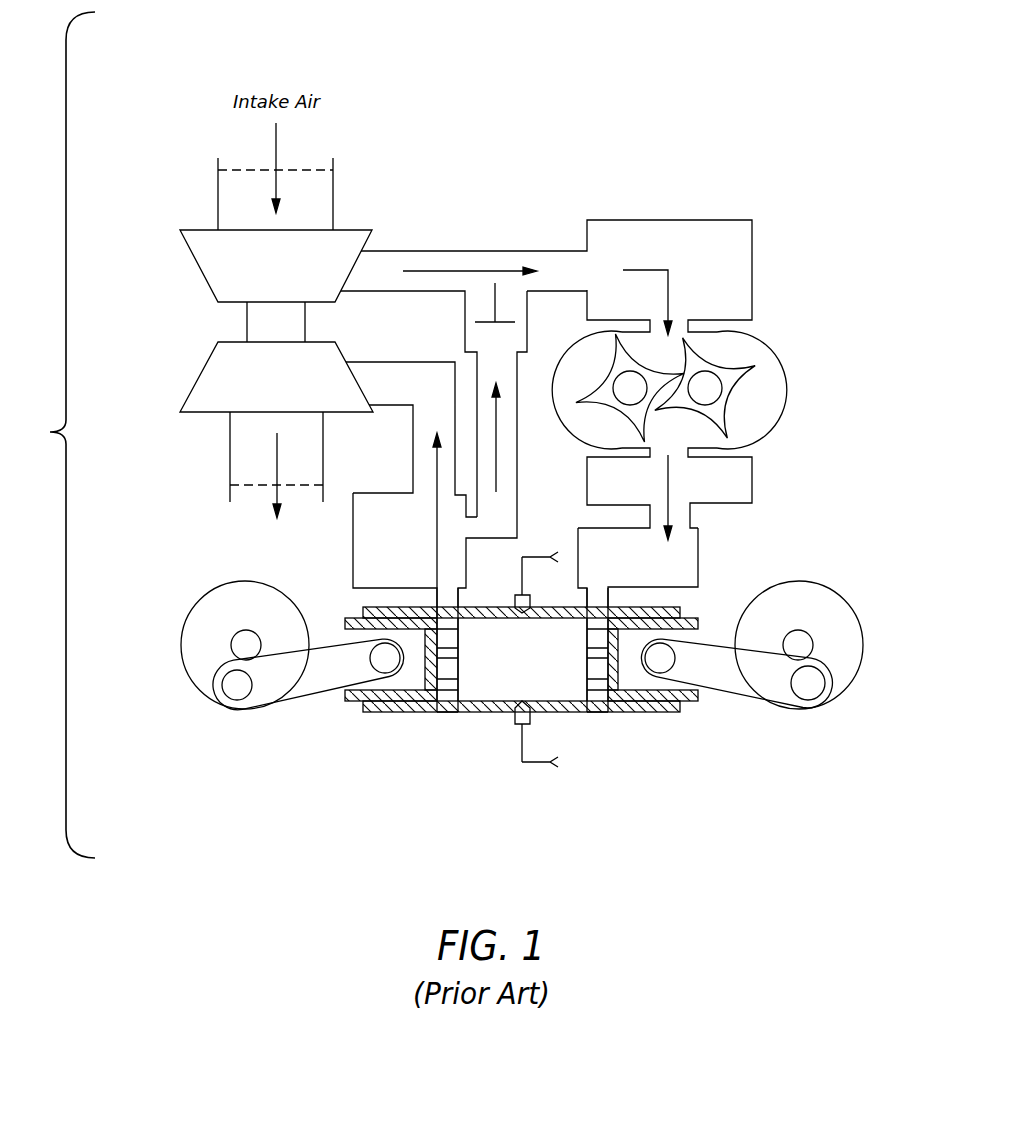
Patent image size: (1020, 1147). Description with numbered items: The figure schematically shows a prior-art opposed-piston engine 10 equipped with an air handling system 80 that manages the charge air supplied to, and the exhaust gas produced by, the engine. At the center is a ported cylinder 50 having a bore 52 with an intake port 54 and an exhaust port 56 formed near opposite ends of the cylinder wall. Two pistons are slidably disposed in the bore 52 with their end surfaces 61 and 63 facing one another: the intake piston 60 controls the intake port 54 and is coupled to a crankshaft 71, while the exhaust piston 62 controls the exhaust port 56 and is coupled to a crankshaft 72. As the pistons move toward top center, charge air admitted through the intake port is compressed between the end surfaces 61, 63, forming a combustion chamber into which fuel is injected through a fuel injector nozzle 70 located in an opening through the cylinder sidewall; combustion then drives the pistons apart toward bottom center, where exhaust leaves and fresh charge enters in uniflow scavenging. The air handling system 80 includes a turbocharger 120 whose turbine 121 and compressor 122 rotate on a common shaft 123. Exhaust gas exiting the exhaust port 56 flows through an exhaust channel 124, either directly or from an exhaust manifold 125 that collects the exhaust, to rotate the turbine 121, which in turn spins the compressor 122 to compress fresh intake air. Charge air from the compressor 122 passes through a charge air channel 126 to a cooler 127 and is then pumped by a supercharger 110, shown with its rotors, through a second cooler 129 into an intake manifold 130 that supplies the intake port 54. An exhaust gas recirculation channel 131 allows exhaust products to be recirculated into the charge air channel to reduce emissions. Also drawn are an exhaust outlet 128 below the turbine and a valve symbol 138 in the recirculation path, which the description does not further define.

The opposed-piston engine 10 is at (48, 432).
The air handling system 80 is at (548, 85).
The turbocharger 120 is at (245, 321).
The compressor 122 is at (196, 268).
The common shaft 123 is at (305, 318).
The turbine 121 is at (193, 385).
The exhaust outlet 128 is at (230, 470).
The exhaust channel 124 is at (413, 416).
The exhaust manifold 125 is at (348, 550).
The charge air channel 126 is at (453, 251).
The cooler 127 is at (752, 280).
The valve 138 is at (495, 298).
The exhaust gas recirculation (EGR) channel 131 is at (517, 423).
The supercharger 110 is at (750, 345).
The cooler 129 is at (752, 475).
The intake manifold 130 is at (698, 565).
The ported cylinder 50 is at (540, 679).
The bore 52 is at (536, 671).
The exhaust port 56 is at (448, 712).
The intake port 54 is at (598, 712).
The end surface 63 is at (438, 643).
The end surface 61 is at (605, 643).
The exhaust piston 62 is at (348, 705).
The intake piston 60 is at (688, 617).
The fuel injector nozzle 70 is at (516, 600).
The crankshaft 72 is at (190, 620).
The crankshaft 71 is at (838, 593).